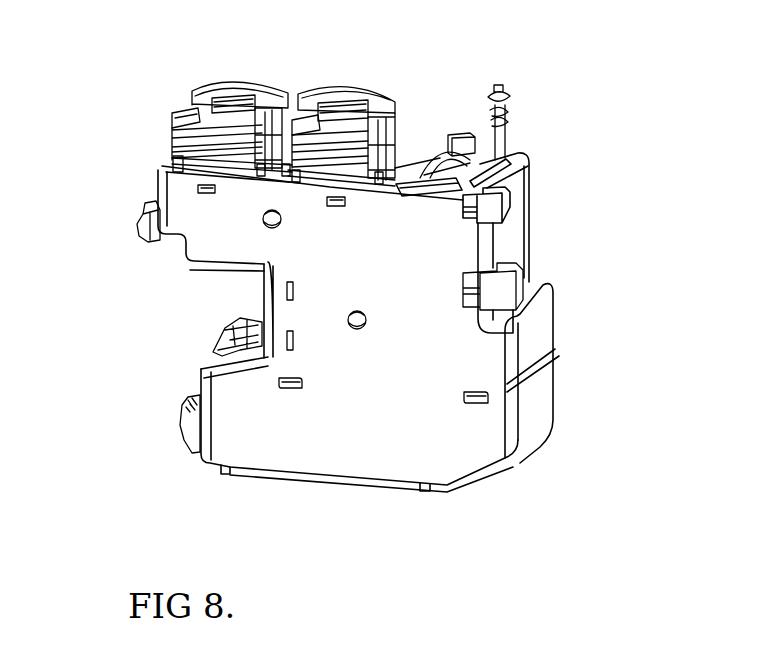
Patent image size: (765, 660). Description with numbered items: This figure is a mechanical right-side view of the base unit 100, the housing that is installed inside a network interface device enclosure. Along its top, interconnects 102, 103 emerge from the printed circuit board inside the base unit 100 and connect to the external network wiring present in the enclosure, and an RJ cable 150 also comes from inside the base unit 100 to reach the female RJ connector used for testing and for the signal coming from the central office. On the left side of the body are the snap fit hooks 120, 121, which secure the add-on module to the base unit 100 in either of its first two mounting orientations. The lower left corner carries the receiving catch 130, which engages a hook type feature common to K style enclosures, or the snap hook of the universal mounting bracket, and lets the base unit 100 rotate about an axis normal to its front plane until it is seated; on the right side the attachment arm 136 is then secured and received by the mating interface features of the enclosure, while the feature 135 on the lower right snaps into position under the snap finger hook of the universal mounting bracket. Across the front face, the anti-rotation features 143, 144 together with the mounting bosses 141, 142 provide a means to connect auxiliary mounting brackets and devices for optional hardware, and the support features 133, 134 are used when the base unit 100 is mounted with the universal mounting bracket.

The base unit 100 is at (543, 248).
The interconnect 102 is at (508, 89).
The interconnect 103 is at (512, 114).
The snap fit hook 120 is at (140, 224).
The snap fit hook 121 is at (228, 340).
The receiving catch 130 is at (178, 428).
The support feature 133 is at (288, 390).
The support feature 134 is at (480, 402).
The feature 135 is at (558, 354).
The attachment arm 136 is at (522, 295).
The mounting boss 141 is at (262, 226).
The mounting boss 142 is at (363, 330).
The anti-rotation feature 143 is at (297, 351).
The anti-rotation feature 144 is at (330, 199).
The RJ cable 150 is at (437, 131).